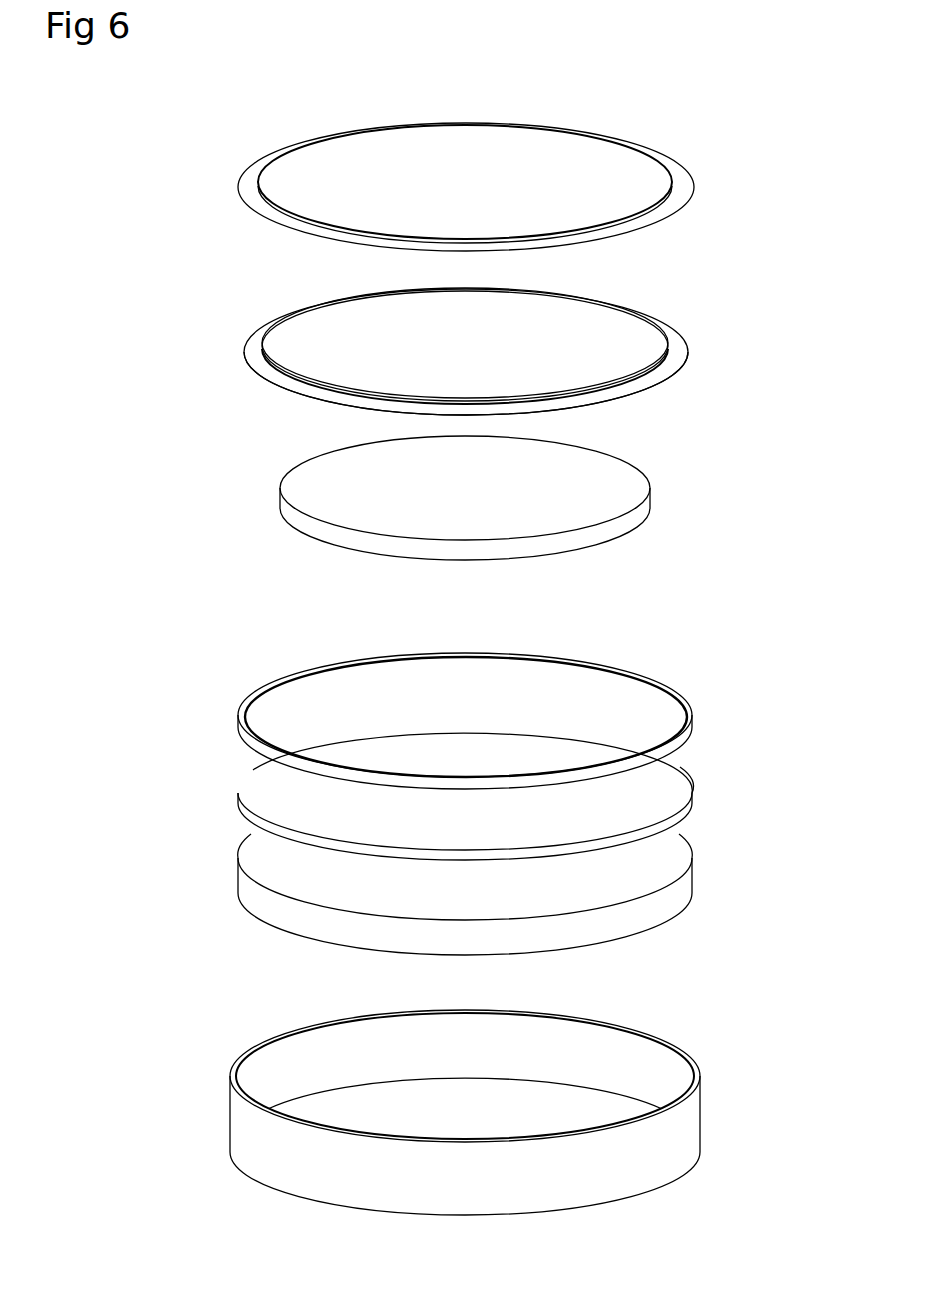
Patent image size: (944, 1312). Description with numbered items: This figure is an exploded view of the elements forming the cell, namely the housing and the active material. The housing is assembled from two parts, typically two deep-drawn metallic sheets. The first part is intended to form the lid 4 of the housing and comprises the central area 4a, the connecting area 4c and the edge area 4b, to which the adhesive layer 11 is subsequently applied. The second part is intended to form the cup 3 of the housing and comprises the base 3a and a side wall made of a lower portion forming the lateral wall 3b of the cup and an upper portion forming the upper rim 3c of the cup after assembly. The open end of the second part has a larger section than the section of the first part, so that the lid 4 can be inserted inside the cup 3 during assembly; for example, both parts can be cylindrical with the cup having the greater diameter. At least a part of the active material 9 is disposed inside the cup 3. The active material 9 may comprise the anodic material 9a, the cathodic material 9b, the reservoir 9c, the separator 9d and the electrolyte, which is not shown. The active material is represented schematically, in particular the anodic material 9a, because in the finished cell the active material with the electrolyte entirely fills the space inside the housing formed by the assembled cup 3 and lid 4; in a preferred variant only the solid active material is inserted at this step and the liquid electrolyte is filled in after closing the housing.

The adhesive layer 11 is at (672, 165).
The lid 4 is at (483, 322).
The central area 4a is at (316, 338).
The edge area 4b is at (673, 358).
The connecting area 4c is at (667, 340).
The active material 9 is at (545, 691).
The anodic material 9a is at (627, 485).
The cathodic material 9b is at (505, 894).
The reservoir 9c is at (668, 800).
The separator 9d is at (633, 698).
The cup 3 is at (479, 1095).
The base 3a is at (553, 1120).
The lateral wall 3b is at (702, 1136).
The upper rim 3c is at (702, 1092).